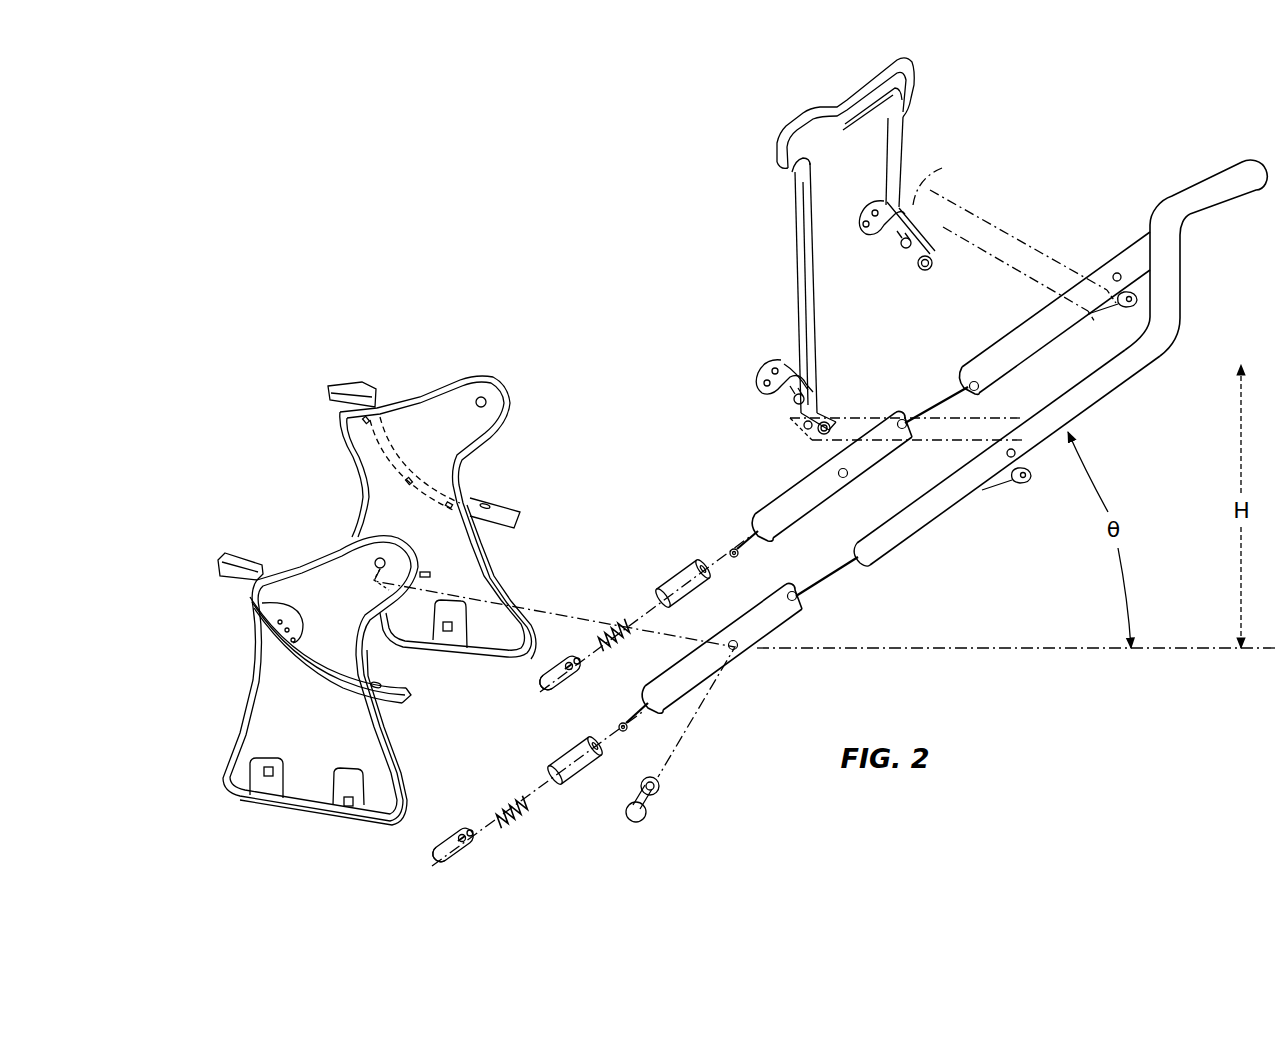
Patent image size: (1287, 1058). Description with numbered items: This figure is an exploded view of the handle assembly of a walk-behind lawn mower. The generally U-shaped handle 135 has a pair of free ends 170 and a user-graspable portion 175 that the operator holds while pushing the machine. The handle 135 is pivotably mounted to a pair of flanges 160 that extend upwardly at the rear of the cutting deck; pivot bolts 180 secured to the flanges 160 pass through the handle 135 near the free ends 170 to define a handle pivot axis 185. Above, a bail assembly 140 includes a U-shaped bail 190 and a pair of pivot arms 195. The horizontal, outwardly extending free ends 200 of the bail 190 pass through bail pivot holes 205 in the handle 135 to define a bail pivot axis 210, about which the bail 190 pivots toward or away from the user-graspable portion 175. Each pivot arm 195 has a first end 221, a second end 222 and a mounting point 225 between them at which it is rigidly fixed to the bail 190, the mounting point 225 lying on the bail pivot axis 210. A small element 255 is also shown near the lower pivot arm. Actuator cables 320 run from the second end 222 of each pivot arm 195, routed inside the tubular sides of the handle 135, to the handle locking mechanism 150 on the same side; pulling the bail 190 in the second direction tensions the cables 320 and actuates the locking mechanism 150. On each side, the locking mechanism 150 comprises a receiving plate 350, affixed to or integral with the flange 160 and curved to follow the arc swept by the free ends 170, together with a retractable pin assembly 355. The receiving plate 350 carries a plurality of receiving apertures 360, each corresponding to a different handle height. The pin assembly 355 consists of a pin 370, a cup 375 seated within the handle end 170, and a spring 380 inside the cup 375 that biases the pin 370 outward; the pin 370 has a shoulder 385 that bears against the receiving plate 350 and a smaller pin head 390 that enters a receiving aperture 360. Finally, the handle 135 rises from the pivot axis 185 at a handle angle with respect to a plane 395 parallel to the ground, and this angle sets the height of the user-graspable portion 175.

The handle 135 is at (917, 561).
The bail assembly 140 is at (763, 143).
The handle locking mechanism 150 is at (608, 498).
The flanges 160 is at (450, 420).
The free ends 170 is at (778, 511).
The user-graspable portion 175 is at (1212, 188).
The pivot bolts 180 is at (653, 795).
The handle pivot axis 185 is at (722, 697).
The bail 190 is at (904, 127).
The pivot arms 195 is at (917, 266).
The free ends 200 is at (905, 196).
The bail pivot holes 205 is at (1113, 276).
The bail pivot axis 210 is at (932, 178).
The first end 221 is at (866, 202).
The second end 222 is at (939, 273).
The mounting point 225 is at (904, 244).
The pin 255 is at (807, 430).
The actuator cables 320 is at (760, 550).
The receiving plate 350 is at (520, 511).
The retractable pin assembly 355 is at (633, 544).
The receiving apertures 360 is at (268, 605).
The pin 370 is at (556, 653).
The cup 375 is at (697, 569).
The spring 380 is at (608, 626).
The shoulder 385 is at (563, 677).
The pin head 390 is at (543, 684).
The plane 395 is at (1070, 650).